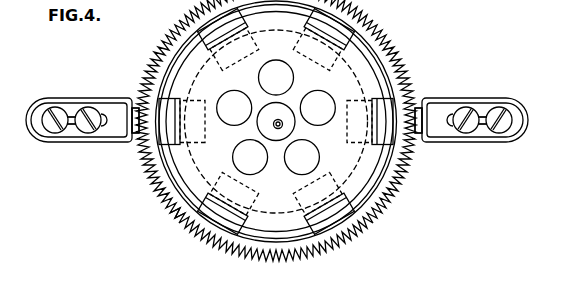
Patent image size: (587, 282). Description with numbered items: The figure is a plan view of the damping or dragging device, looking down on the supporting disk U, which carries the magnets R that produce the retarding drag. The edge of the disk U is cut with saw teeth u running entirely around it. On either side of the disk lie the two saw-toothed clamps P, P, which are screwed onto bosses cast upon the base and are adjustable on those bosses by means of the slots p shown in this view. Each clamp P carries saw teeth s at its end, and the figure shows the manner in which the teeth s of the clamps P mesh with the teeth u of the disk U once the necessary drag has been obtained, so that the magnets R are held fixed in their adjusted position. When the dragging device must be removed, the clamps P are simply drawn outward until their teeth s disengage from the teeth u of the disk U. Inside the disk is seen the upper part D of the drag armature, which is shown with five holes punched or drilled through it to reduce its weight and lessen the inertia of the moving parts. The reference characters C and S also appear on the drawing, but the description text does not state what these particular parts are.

The magnets R is at (190, 188).
The casing ring C is at (355, 72).
The upper part of the drag armature D is at (276, 122).
The shaft S is at (276, 122).
The supporting disk U is at (399, 183).
The saw teeth u is at (187, 220).
The saw-toothed clamps P is at (100, 113).
The slots p is at (72, 125).
The saw teeth s is at (134, 124).